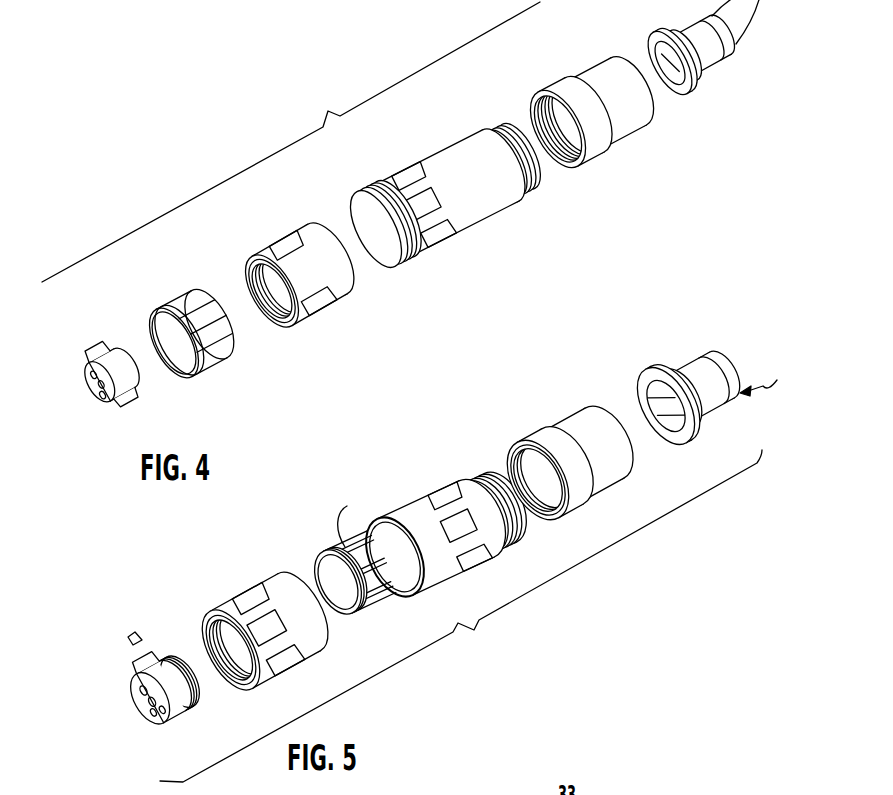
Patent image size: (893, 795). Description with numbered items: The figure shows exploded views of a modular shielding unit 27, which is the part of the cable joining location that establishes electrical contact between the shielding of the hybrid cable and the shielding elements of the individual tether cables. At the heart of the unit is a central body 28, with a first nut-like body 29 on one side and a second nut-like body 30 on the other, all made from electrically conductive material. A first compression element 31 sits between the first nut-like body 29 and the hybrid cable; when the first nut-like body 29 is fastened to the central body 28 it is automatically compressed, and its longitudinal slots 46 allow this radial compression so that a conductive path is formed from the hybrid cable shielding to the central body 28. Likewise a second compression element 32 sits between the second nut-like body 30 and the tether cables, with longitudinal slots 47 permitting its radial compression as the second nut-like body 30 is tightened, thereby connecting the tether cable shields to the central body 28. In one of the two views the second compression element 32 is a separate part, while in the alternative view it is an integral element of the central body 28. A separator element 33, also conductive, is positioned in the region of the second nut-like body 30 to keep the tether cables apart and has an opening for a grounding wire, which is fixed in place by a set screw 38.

In FIG. 4, the modular shielding unit 27 is at (291, 142).
In FIG. 5, the modular shielding unit 27 is at (461, 616).
In FIG. 4, the central body 28 is at (470, 205).
In FIG. 5, the central body 28 is at (432, 513).
In FIG. 4, the first nut-like body 29 is at (623, 115).
In FIG. 5, the first nut-like body 29 is at (590, 430).
In FIG. 4, the second nut-like body 30 is at (336, 285).
In FIG. 5, the second nut-like body 30 is at (285, 595).
In FIG. 4, the first compression element 31 is at (722, 50).
In FIG. 5, the first compression element 31 is at (720, 382).
In FIG. 4, the second compression element 32 is at (207, 355).
In FIG. 5, the second compression element 32 is at (392, 598).
In FIG. 4, the separator element 33 is at (117, 343).
In FIG. 5, the separator element 33 is at (150, 713).
In FIG. 5, the set screw 38 is at (136, 630).
In FIG. 5, the slots 46 is at (767, 381).
In FIG. 4, the slots 47 is at (180, 305).
In FIG. 5, the slots 47 is at (347, 506).